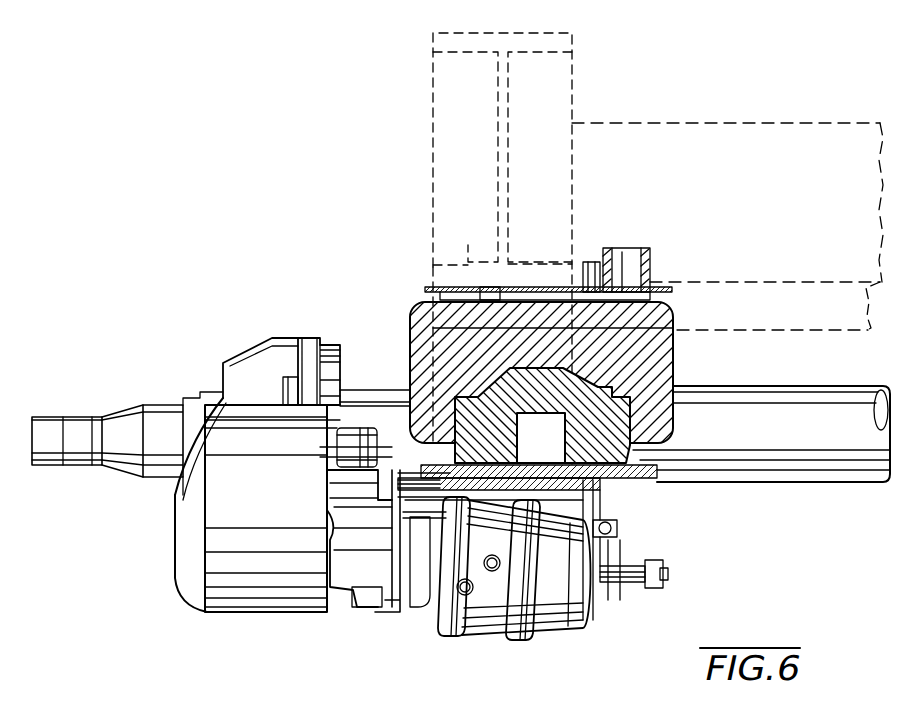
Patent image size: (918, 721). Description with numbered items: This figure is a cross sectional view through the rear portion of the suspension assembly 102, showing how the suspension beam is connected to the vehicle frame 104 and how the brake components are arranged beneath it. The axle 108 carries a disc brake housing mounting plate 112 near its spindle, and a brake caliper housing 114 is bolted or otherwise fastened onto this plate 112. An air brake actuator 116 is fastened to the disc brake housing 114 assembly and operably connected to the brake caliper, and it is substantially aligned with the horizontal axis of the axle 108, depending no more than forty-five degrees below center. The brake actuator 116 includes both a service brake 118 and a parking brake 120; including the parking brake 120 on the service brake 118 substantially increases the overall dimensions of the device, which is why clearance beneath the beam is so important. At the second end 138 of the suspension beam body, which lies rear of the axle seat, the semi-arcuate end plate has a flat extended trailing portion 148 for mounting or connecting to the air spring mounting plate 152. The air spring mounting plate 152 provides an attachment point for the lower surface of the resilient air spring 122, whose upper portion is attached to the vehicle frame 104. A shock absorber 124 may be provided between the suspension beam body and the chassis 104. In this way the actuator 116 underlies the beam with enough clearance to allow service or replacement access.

The suspension assembly 102 is at (660, 492).
The vehicle frame 104 is at (433, 52).
The axle 108 is at (824, 462).
The disc brake housing mounting plate 112 is at (320, 353).
The brake caliper housing 114 is at (228, 600).
The air brake actuator 116 is at (445, 640).
The service brake 118 is at (420, 618).
The parking brake 120 is at (567, 620).
The air spring 122 is at (425, 322).
The shock absorber 124 is at (635, 595).
The second end 138 is at (630, 500).
The flat extended trailing portion 148 is at (648, 510).
The air spring mounting plate 152 is at (622, 483).